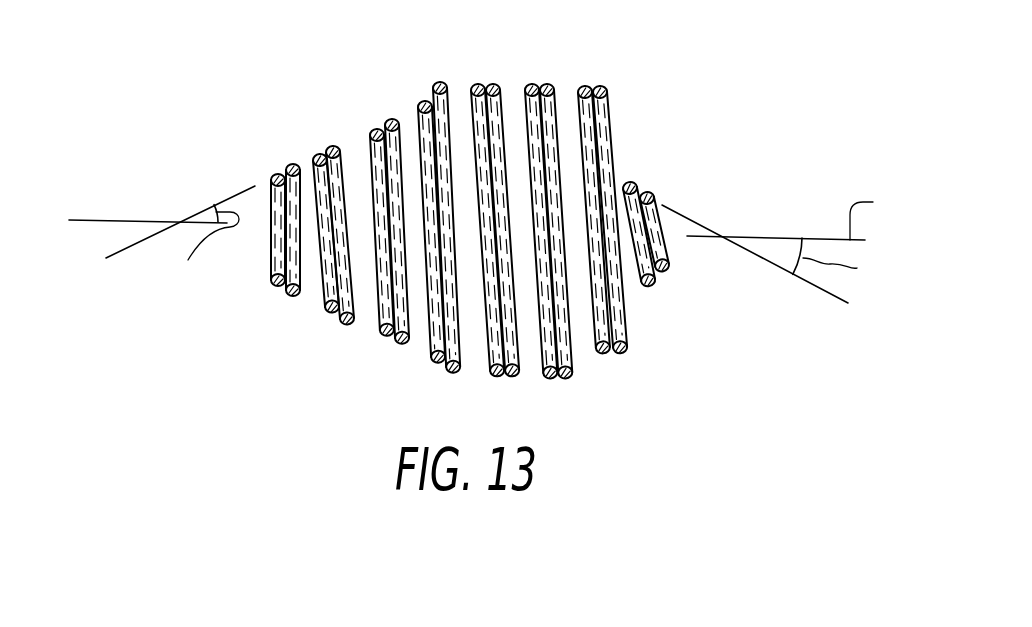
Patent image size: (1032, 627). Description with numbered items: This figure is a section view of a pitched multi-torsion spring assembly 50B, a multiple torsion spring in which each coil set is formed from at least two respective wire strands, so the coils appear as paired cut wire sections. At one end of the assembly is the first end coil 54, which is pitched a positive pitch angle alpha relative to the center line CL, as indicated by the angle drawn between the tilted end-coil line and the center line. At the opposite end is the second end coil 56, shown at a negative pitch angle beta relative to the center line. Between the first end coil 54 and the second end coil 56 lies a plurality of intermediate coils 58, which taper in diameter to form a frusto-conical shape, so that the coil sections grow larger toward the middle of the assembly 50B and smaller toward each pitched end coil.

The pitched multi-torsion spring assembly 50B is at (696, 379).
The first end coil 54 is at (245, 268).
The second end coil 56 is at (697, 203).
The intermediate coils 58 is at (504, 72).